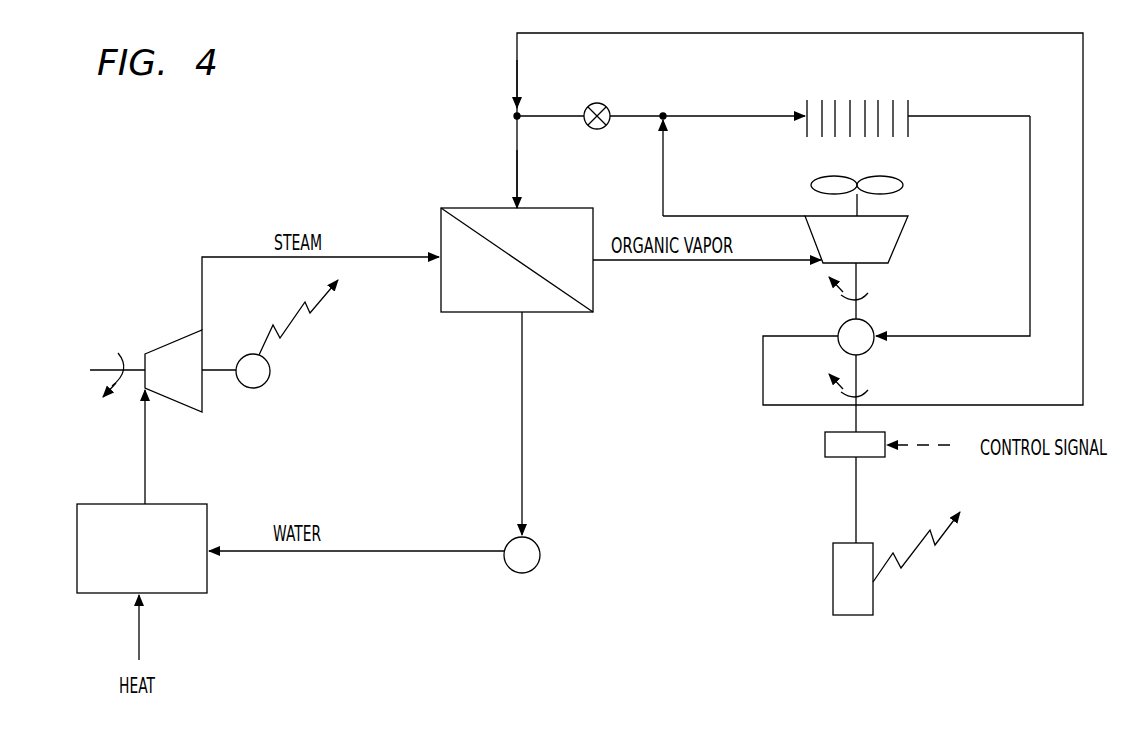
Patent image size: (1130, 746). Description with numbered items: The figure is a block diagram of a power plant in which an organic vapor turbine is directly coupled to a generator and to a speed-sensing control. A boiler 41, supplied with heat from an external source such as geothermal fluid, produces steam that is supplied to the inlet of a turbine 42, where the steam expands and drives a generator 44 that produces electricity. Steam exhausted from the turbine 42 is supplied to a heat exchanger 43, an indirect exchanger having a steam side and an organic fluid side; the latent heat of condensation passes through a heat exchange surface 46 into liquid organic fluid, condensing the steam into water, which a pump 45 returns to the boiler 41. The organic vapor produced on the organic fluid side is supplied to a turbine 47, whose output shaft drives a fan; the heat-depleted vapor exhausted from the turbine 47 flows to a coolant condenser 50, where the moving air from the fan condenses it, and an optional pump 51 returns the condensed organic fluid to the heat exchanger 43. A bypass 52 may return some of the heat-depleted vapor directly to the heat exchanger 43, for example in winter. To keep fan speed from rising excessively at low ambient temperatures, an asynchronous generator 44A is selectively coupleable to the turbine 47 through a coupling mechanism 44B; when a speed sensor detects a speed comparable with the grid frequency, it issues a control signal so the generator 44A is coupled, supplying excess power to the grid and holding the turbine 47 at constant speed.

The boiler 41 is at (207, 593).
The turbine 42 is at (170, 340).
The heat exchanger 43 is at (471, 206).
The generator 44 is at (264, 384).
The asynchronous generator 44A is at (833, 590).
The coupling mechanism 44B is at (825, 442).
The pump 45 is at (539, 547).
The heat exchange surface 46 is at (517, 262).
The turbine 47 is at (893, 248).
The coolant condenser 50 is at (868, 103).
The pump 51 is at (866, 353).
The bypass 52 is at (607, 106).